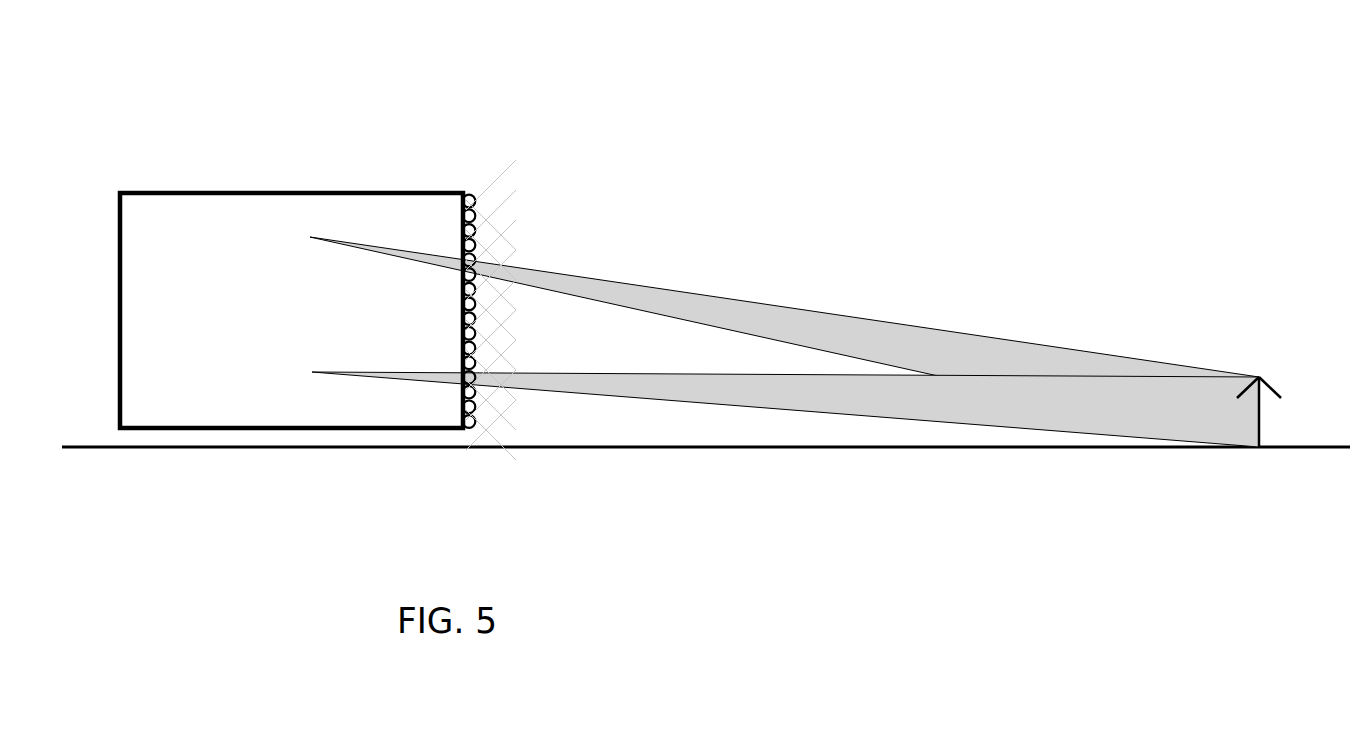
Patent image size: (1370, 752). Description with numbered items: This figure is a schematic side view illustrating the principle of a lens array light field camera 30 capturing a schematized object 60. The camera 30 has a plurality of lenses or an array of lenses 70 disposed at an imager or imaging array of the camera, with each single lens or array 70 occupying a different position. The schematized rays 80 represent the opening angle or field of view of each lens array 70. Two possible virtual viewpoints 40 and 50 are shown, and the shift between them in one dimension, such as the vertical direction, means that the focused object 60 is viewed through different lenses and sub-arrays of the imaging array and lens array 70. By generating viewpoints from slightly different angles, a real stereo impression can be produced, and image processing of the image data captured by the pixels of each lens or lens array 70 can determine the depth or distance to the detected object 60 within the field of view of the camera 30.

The lens array light field camera 30 is at (342, 192).
The virtual viewpoint 40 is at (756, 330).
The virtual viewpoint 50 is at (749, 395).
The schematized object 60 is at (1262, 422).
The array of lenses 70 is at (458, 206).
The schematized rays 80 is at (540, 193).